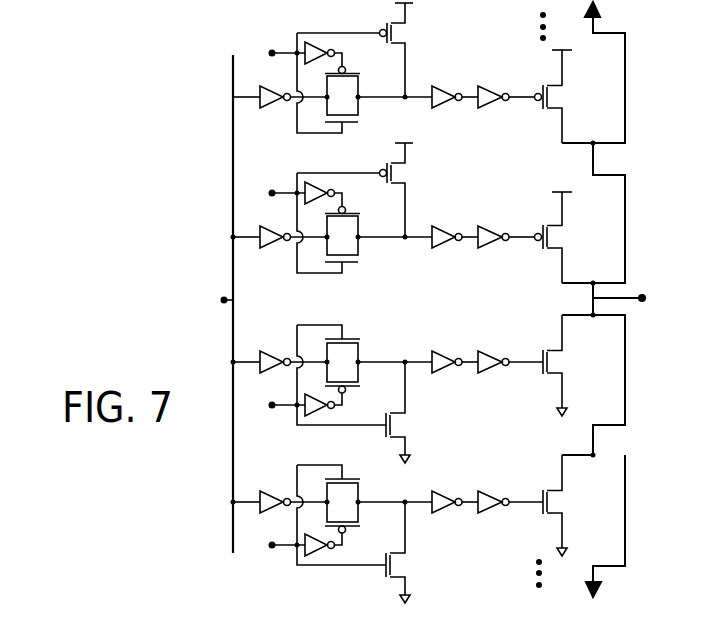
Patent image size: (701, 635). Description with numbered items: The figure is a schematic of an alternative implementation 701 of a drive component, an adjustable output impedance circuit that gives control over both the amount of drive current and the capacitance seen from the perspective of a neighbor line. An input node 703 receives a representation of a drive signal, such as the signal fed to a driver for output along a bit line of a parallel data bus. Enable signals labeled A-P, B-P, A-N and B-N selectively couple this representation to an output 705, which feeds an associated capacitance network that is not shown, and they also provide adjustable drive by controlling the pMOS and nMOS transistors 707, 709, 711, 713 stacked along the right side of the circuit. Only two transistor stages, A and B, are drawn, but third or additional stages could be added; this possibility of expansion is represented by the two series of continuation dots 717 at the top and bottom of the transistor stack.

The alternative implementation of a drive component 701 is at (187, 253).
The input node 703 is at (222, 301).
The output 705 is at (592, 297).
The pMOS transistor 707 is at (540, 103).
The pMOS transistor 709 is at (545, 227).
The nMOS transistor 711 is at (538, 375).
The nMOS transistor 713 is at (538, 493).
The continuation dots 717 is at (537, 32).